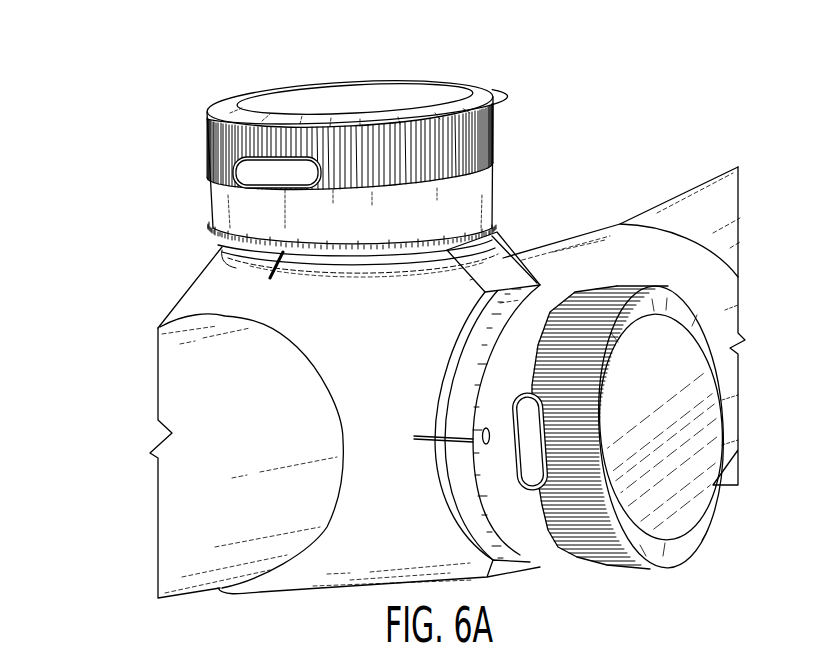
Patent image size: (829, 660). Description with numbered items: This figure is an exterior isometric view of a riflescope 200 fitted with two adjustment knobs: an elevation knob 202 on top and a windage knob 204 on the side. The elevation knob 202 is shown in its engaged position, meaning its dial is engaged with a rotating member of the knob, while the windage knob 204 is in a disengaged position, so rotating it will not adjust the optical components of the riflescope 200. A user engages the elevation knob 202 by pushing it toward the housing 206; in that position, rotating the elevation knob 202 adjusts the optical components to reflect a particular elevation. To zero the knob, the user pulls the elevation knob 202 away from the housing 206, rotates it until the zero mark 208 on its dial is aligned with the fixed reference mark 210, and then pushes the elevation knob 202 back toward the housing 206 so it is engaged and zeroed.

The riflescope 200 is at (99, 102).
The elevation knob 202 is at (516, 116).
The windage knob 204 is at (626, 583).
The housing 206 is at (582, 232).
The zero mark 208 is at (225, 217).
The reference mark 210 is at (220, 247).